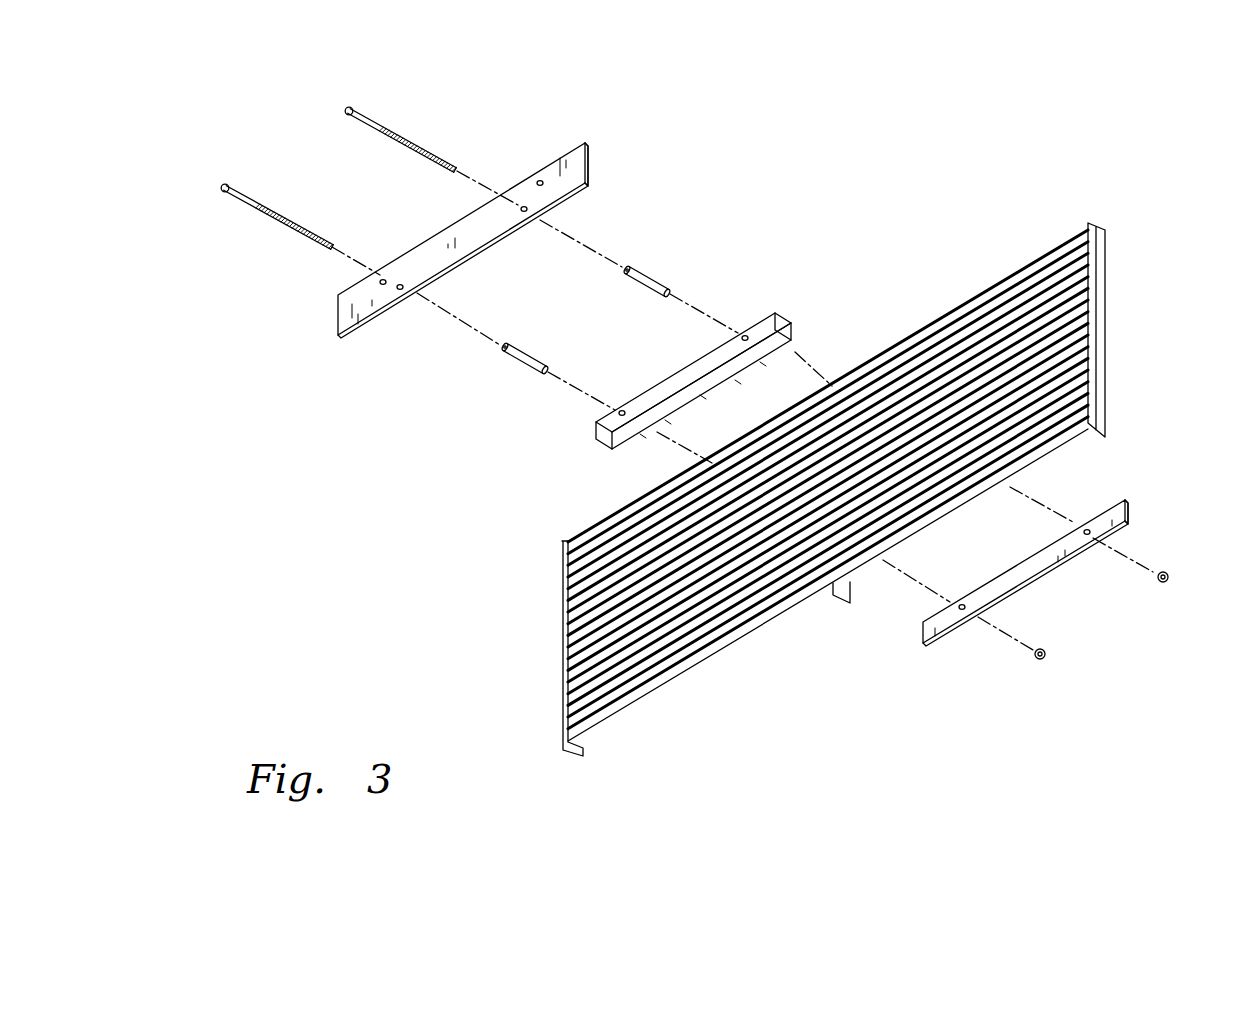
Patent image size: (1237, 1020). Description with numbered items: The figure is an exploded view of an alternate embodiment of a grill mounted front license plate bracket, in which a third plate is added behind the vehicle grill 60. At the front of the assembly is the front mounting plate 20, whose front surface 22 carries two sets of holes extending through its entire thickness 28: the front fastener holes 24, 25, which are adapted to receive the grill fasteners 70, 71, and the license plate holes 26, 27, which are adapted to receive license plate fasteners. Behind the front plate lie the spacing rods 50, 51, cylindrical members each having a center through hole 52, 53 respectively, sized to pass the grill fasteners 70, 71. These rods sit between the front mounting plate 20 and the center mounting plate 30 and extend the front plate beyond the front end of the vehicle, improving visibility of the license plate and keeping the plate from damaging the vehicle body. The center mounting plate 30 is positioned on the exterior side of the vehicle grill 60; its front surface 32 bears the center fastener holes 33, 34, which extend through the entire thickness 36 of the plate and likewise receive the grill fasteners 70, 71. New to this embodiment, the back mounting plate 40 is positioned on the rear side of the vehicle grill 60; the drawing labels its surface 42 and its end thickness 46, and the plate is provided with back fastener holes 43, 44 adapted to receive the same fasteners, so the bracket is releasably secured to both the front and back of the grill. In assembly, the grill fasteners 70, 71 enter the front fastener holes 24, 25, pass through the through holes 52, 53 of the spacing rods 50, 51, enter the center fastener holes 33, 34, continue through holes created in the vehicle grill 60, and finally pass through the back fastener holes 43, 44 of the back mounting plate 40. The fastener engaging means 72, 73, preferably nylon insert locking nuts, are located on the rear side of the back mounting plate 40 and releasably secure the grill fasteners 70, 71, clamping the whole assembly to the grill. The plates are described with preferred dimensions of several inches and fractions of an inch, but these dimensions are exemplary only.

The front mounting plate 20 is at (553, 97).
The front surface 22 is at (472, 230).
The front fastener hole 24 is at (400, 291).
The front fastener hole 25 is at (518, 215).
The license plate hole 26 is at (379, 283).
The license plate hole 27 is at (535, 178).
The thickness 28 is at (592, 150).
The center mounting plate 30 is at (685, 362).
The front surface 32 is at (690, 372).
The center fastener hole 33 is at (744, 334).
The center fastener hole 34 is at (621, 409).
The thickness 36 is at (791, 316).
The back mounting plate 40 is at (1025, 569).
The surface of lower plate 42 is at (1003, 572).
The back fastener hole 43 is at (1086, 536).
The back fastener hole 44 is at (961, 611).
The end of lower plate 46 is at (1129, 507).
The spacing rod 50 is at (516, 346).
The spacing rod 51 is at (656, 245).
The center through hole 52 is at (627, 266).
The center through hole 53 is at (510, 344).
The vehicle grill 60 is at (998, 290).
The grill fastener 70 is at (243, 188).
The grill fastener 71 is at (367, 106).
The fastener engaging means 72 is at (1040, 660).
The fastener engaging means 73 is at (1169, 577).